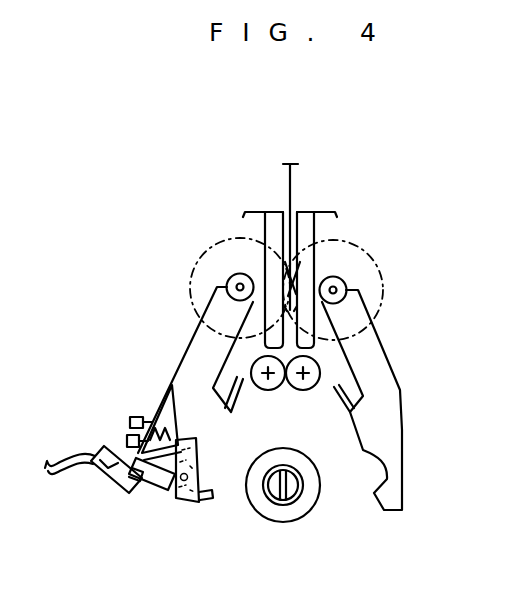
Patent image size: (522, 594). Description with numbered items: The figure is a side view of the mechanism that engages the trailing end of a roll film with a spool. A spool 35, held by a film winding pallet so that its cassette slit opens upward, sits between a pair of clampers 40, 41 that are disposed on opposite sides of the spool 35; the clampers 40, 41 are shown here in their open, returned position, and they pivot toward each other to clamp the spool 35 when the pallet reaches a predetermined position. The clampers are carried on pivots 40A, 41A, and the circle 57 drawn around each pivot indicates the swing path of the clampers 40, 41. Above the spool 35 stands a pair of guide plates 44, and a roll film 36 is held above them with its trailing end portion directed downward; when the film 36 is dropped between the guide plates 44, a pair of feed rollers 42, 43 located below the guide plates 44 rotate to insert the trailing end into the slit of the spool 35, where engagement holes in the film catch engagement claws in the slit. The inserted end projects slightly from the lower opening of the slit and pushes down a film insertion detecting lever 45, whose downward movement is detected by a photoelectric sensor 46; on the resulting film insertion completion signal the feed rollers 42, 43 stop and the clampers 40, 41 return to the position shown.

The spool 35 is at (288, 511).
The roll film 36 is at (298, 182).
The clamper 40 is at (207, 346).
The pivot of left arm 40A is at (240, 273).
The clamper 41 is at (383, 357).
The pivot of right arm 41A is at (343, 279).
The feed roller 42 is at (302, 390).
The feed roller 43 is at (265, 390).
The guide plates 44 is at (265, 230).
The film insertion detecting lever 45 is at (163, 482).
The photoelectric sensor 46 is at (91, 477).
The arm swing circle 57 is at (190, 268).